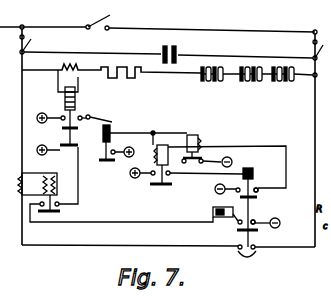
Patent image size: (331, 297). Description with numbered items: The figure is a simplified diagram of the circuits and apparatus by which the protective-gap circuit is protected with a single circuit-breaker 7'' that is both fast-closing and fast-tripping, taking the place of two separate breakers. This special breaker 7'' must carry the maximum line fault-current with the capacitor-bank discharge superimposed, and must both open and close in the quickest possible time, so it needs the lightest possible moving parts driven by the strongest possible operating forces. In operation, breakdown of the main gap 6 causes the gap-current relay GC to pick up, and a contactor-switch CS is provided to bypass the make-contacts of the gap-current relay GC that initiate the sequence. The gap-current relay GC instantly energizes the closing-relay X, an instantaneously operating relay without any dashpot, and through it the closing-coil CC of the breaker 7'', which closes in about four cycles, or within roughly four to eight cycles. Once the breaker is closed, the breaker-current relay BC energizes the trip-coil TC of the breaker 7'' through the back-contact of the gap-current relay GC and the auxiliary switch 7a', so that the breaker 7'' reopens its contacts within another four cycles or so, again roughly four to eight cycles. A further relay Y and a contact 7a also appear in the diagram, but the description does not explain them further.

The main gap 6 is at (209, 82).
The gap-current relay GC is at (80, 94).
The contactor-switch CS is at (134, 133).
The closing-relay X is at (208, 160).
The relay Y is at (207, 142).
The closing-coil CC is at (247, 201).
The contact of relay CC 7a is at (268, 197).
The auxiliary switch 7a' is at (262, 216).
The single circuit-breaker 7'' is at (258, 256).
The trip-coil TC is at (213, 210).
The breaker-current relay BC is at (40, 186).